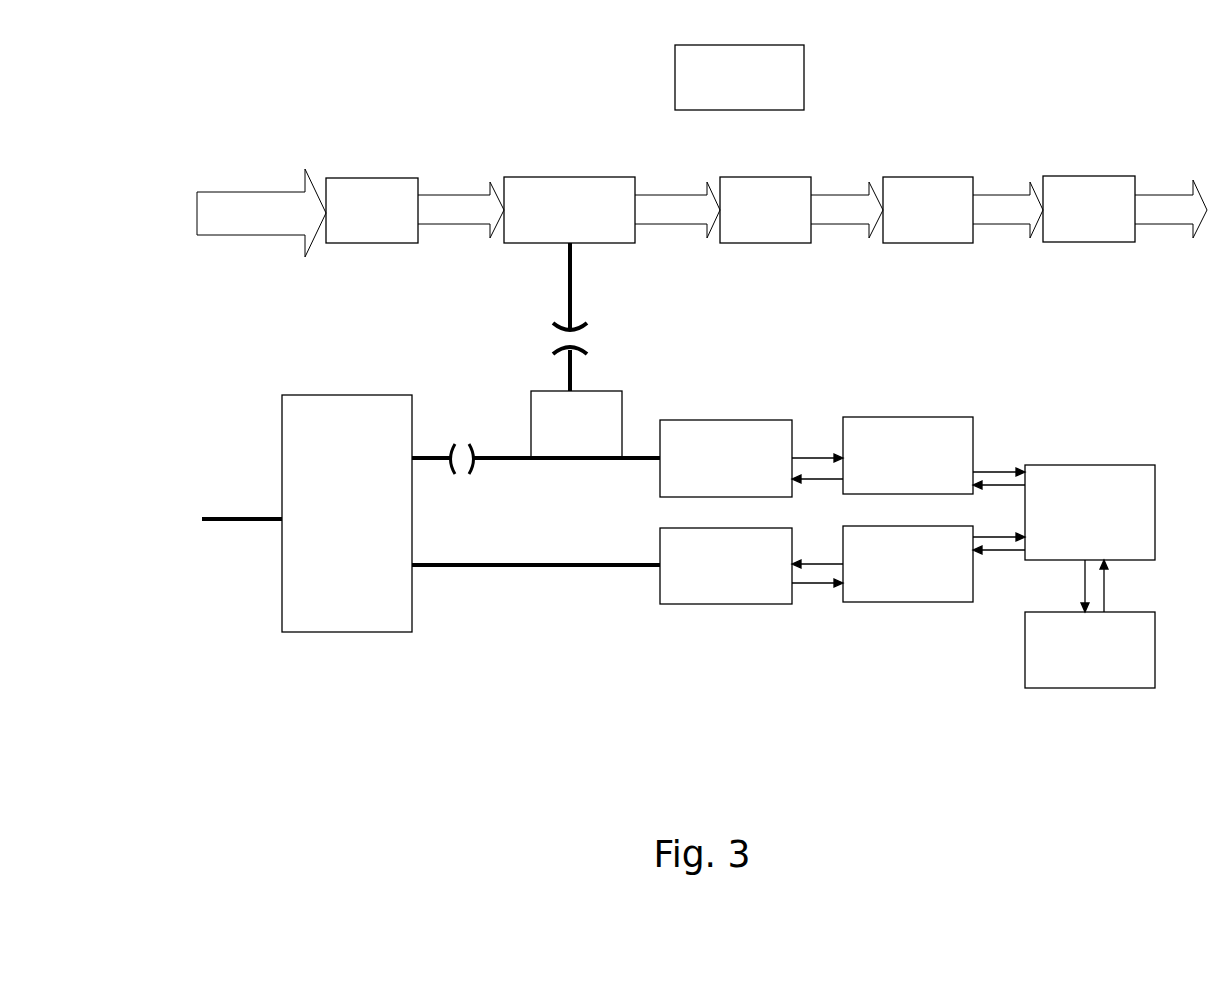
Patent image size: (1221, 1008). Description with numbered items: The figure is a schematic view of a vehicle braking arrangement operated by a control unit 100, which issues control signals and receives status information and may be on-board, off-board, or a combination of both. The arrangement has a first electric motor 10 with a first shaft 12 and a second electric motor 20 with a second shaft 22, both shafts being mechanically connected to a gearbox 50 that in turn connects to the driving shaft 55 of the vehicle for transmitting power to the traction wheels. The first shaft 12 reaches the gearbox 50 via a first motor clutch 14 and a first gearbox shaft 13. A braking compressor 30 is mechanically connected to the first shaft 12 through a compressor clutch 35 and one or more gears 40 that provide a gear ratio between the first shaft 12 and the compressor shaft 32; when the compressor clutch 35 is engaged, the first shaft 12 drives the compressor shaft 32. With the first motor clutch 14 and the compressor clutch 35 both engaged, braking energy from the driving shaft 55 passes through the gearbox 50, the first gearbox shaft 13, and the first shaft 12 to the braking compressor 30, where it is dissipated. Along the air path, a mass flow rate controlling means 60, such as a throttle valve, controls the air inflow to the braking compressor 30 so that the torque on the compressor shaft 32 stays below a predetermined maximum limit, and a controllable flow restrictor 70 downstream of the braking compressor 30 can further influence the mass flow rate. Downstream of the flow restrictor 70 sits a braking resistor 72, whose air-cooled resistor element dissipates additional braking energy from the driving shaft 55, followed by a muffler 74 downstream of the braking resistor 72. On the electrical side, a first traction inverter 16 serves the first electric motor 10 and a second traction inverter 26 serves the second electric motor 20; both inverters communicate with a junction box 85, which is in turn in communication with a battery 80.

The control unit 100 is at (739, 77).
The mass flow rate controlling means 60 is at (372, 210).
The braking compressor 30 is at (569, 210).
The flow restrictor 70 is at (765, 210).
The braking resistor 72 is at (928, 210).
The muffler 74 is at (1089, 209).
The compressor shaft 32 is at (572, 276).
The compressor clutch 35 is at (585, 323).
The gears 40 is at (576, 424).
The gearbox 50 is at (347, 513).
The driving shaft 55 is at (220, 517).
The first gearbox shaft 13 is at (443, 462).
The first motor clutch 14 is at (453, 443).
The first shaft 12 is at (500, 457).
The second shaft 22 is at (502, 568).
The first electric motor 10 is at (726, 458).
The first traction inverter 16 is at (908, 455).
The second electric motor 20 is at (726, 566).
The second traction inverter 26 is at (908, 564).
The junction box 85 is at (1090, 512).
The battery 80 is at (1090, 650).